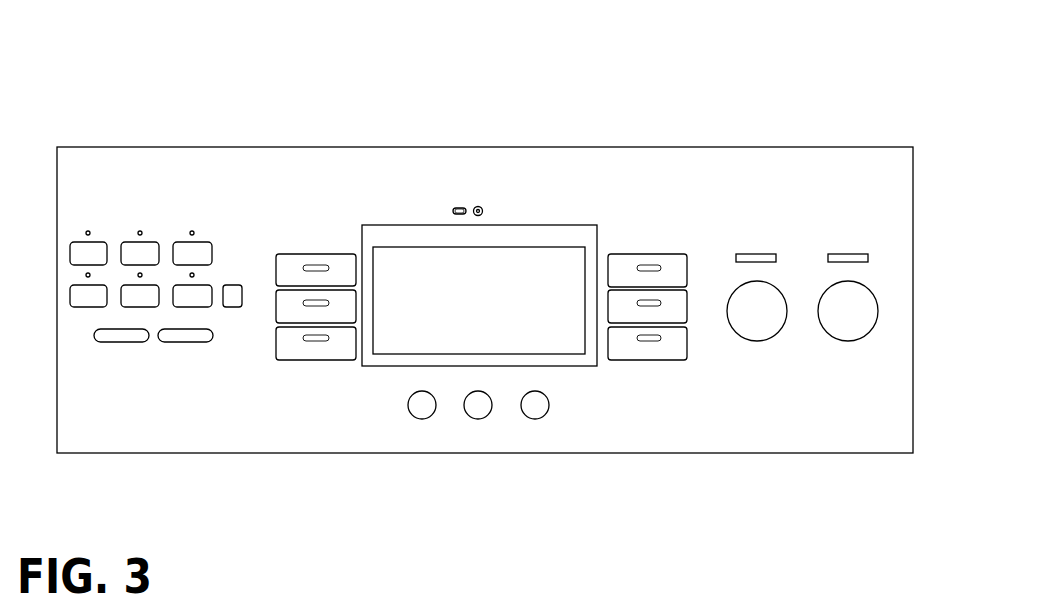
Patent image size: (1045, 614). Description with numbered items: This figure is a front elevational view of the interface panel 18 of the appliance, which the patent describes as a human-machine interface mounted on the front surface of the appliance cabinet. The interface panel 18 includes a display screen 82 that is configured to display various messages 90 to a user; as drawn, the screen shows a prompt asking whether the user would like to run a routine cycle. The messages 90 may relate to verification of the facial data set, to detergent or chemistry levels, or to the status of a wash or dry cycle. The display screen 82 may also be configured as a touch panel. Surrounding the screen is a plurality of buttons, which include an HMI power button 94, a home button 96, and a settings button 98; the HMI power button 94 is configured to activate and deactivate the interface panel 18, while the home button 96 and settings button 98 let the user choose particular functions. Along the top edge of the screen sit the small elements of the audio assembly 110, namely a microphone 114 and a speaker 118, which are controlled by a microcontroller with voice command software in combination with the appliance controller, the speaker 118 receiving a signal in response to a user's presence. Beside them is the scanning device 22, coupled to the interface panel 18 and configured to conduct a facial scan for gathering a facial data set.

The interface panel 18 is at (158, 101).
The home button 96 is at (338, 262).
The display screen 82 is at (548, 238).
The messages 90 is at (395, 355).
The audio assembly 110 is at (440, 209).
The microphone 114 is at (459, 208).
The speaker 118 is at (463, 207).
The scanning device 22 is at (484, 208).
The HMI power button 94 is at (672, 265).
The settings button 98 is at (672, 305).